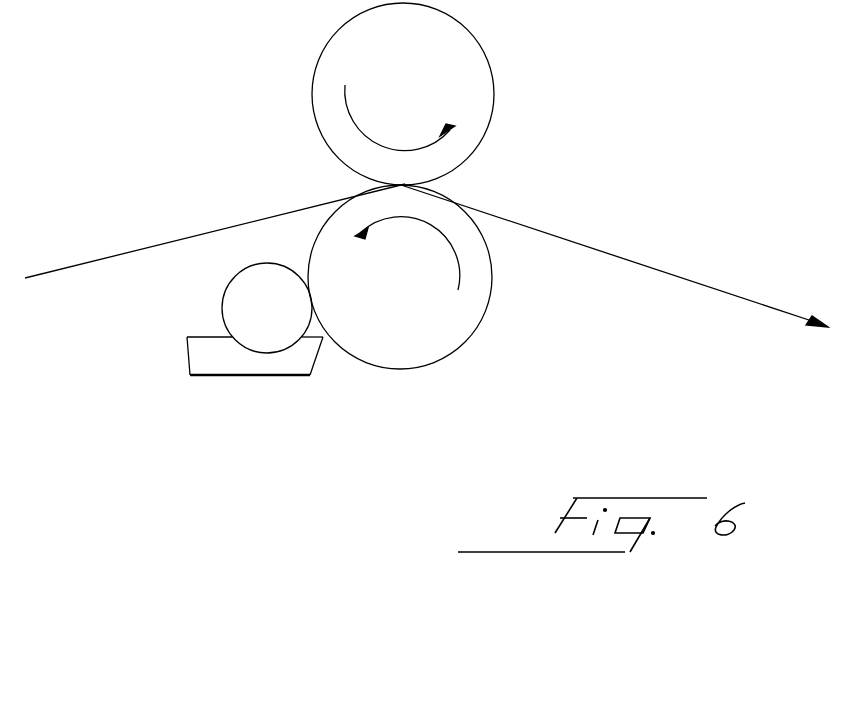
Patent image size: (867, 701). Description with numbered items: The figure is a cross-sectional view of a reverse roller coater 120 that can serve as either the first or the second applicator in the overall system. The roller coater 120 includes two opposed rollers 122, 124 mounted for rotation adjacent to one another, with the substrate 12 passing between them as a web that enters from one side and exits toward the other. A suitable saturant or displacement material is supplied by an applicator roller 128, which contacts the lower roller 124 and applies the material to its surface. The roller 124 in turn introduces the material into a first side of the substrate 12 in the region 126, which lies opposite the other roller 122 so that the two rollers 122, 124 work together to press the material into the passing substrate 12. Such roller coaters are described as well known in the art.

The substrate 12 is at (613, 252).
The reverse roller coater 120 is at (277, 133).
The roller 122 is at (485, 93).
The roller 124 is at (413, 357).
The region 126 is at (483, 222).
The applicator roller 128 is at (235, 298).